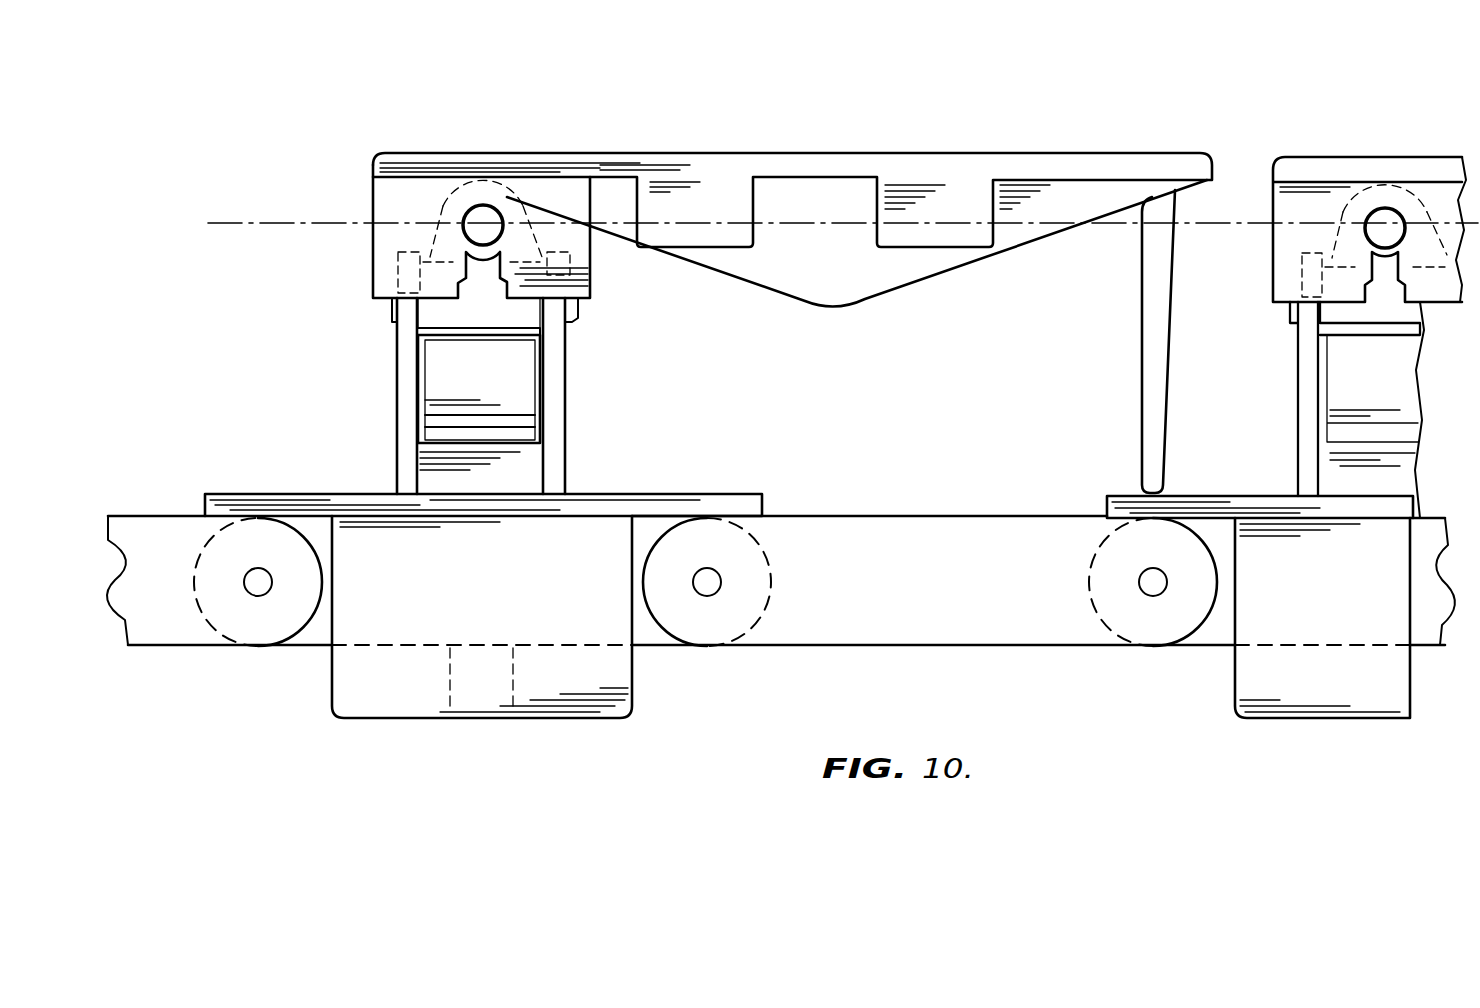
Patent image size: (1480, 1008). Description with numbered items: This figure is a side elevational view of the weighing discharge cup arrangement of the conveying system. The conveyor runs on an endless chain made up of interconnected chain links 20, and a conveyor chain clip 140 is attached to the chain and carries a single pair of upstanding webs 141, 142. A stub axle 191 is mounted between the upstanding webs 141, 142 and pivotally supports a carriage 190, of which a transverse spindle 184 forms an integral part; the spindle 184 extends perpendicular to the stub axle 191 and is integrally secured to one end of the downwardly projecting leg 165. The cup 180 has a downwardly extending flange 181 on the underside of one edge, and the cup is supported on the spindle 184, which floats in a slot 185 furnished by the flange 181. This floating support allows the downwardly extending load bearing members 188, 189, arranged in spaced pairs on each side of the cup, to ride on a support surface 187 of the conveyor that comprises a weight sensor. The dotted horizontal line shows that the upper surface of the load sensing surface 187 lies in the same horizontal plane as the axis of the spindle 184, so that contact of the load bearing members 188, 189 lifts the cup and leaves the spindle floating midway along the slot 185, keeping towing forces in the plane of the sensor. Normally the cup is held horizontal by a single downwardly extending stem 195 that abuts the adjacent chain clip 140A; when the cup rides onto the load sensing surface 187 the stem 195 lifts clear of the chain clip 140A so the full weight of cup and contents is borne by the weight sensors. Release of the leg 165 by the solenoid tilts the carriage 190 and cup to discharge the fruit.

The chain link 20 is at (708, 605).
The conveyor chain clip 140 is at (582, 492).
The adjacent chain clip 140A is at (525, 616).
The upstanding web 141 is at (563, 408).
The upstanding web 142 is at (400, 373).
The downwardly projecting leg 165 is at (534, 380).
The cup 180 is at (767, 170).
The downwardly extending flange 181 is at (383, 247).
The transverse spindle 184 is at (481, 208).
The slot 185 is at (507, 250).
The support surface 187 is at (268, 222).
The load bearing member 188 is at (705, 226).
The load bearing member 189 is at (947, 233).
The carriage 190 is at (497, 200).
The stub axle 191 is at (392, 316).
The downwardly extending stem 195 is at (1160, 278).